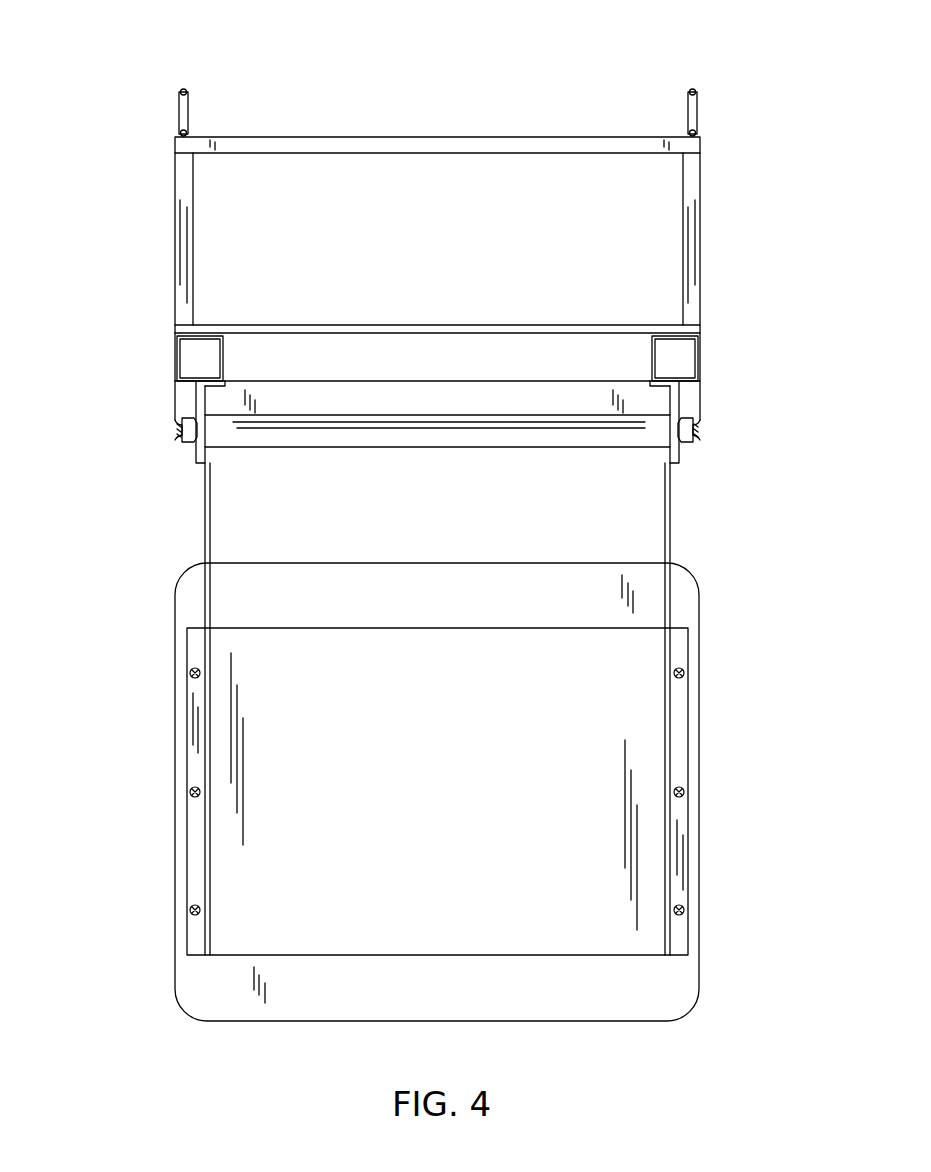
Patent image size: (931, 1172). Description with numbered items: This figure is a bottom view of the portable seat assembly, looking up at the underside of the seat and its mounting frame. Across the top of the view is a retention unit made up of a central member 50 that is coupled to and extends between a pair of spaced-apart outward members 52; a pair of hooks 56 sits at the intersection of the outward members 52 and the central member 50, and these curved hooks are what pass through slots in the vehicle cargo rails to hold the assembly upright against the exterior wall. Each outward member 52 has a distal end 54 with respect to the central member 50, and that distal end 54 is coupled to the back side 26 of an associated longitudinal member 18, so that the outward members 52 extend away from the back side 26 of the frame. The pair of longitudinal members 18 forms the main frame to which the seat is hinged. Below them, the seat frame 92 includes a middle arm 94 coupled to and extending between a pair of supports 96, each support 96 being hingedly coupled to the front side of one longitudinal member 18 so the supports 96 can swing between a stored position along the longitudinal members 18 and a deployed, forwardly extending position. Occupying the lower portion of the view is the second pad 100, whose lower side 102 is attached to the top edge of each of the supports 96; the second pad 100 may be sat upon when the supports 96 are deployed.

The longitudinal member 18 is at (177, 352).
The back side 26 is at (200, 333).
The central member 50 is at (440, 138).
The outward member 52 is at (175, 222).
The distal end 54 is at (692, 352).
The hook 56 is at (183, 88).
The seat frame 92 is at (675, 511).
The middle arm 94 is at (262, 447).
The support 96 is at (205, 520).
The second pad 100 is at (303, 1005).
The lower side 102 is at (582, 990).